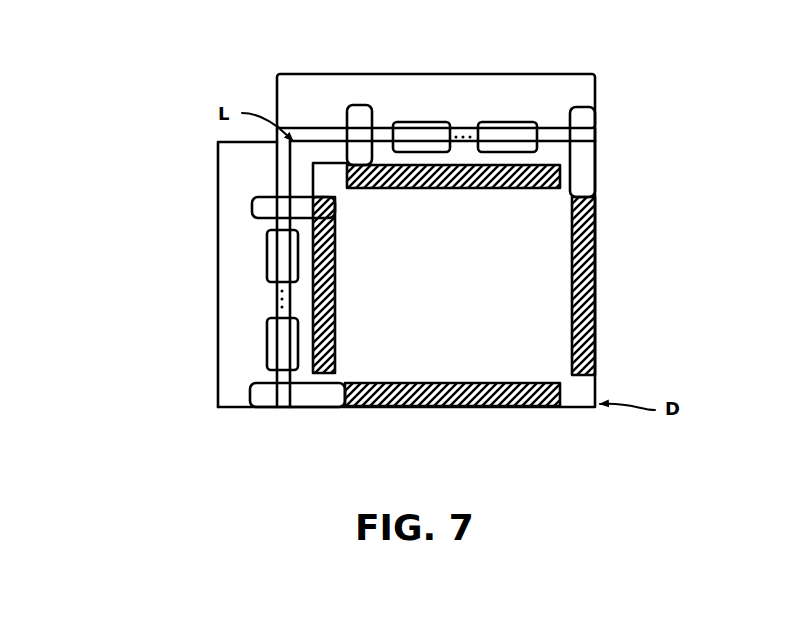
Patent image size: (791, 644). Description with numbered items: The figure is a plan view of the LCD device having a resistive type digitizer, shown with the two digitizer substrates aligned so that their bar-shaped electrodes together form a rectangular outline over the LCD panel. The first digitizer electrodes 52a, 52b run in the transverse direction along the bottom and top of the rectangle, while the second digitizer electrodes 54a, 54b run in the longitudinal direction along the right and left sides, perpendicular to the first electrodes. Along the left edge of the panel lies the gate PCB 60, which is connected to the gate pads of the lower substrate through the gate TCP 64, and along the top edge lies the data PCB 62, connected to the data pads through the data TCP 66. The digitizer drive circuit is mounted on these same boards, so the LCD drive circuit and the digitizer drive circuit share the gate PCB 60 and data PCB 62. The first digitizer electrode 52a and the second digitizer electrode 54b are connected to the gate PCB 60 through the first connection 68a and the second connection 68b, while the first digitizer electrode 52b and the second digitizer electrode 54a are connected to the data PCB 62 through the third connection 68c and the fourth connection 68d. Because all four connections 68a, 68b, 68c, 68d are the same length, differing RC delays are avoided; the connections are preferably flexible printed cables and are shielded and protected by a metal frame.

The first digitizer electrode 52a is at (470, 407).
The first digitizer electrode 52b is at (555, 165).
The second digitizer electrode 54a is at (596, 288).
The second digitizer electrode 54b is at (313, 298).
The gate PCB 60 is at (237, 407).
The data PCB 62 is at (596, 88).
The gate TCP 64 is at (267, 250).
The data TCP 66 is at (505, 125).
The first connection 68a is at (297, 407).
The second connection 68b is at (252, 205).
The third connection 68c is at (347, 105).
The fourth connection 68d is at (596, 157).